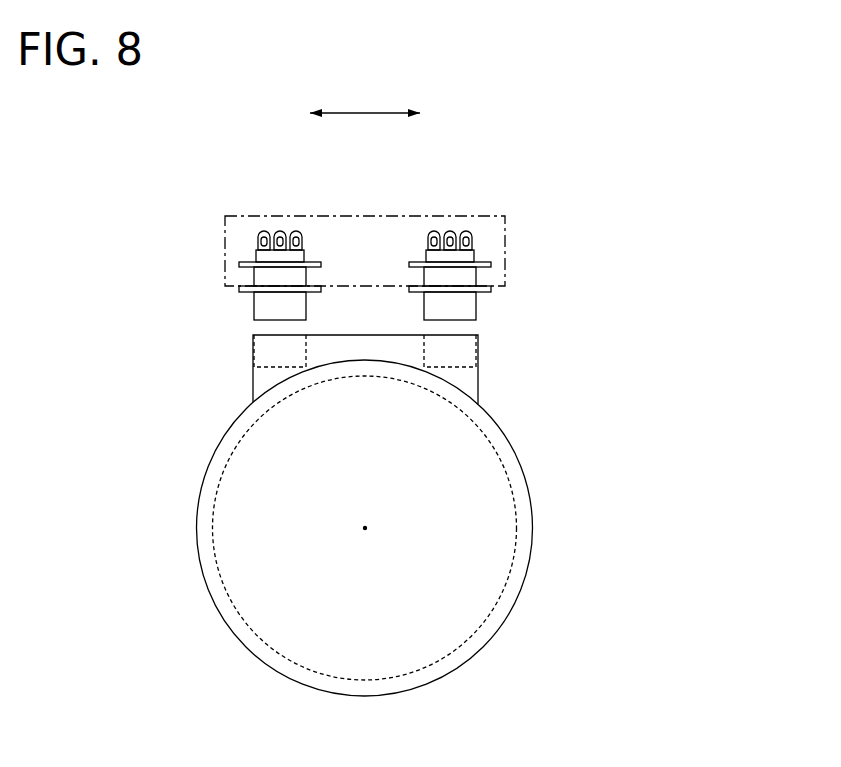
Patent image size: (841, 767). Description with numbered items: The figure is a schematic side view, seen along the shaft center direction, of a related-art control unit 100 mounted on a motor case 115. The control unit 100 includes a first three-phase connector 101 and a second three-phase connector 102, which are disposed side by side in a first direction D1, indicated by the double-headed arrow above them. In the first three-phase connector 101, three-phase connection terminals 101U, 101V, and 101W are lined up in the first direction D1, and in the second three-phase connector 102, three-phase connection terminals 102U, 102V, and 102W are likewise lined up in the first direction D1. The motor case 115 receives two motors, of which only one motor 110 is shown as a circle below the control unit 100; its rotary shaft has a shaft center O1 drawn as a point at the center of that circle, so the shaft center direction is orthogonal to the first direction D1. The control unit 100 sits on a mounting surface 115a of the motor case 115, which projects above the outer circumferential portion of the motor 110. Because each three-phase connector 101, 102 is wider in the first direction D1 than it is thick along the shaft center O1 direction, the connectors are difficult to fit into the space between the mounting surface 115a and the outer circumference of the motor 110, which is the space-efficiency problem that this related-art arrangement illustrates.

The control unit 100 is at (508, 232).
The first three-phase connector 101 is at (257, 253).
The three-phase connection terminal 101U is at (262, 230).
The three-phase connection terminal 101V is at (280, 230).
The three-phase connection terminal 101W is at (298, 230).
The second three-phase connector 102 is at (475, 253).
The three-phase connection terminal 102U is at (432, 230).
The three-phase connection terminal 102V is at (450, 230).
The three-phase connection terminal 102W is at (468, 230).
The motor 110 is at (503, 463).
The motor case 115 is at (533, 527).
The mounting surface 115a is at (465, 335).
The shaft center O1 is at (368, 528).
The first direction D1 is at (365, 99).